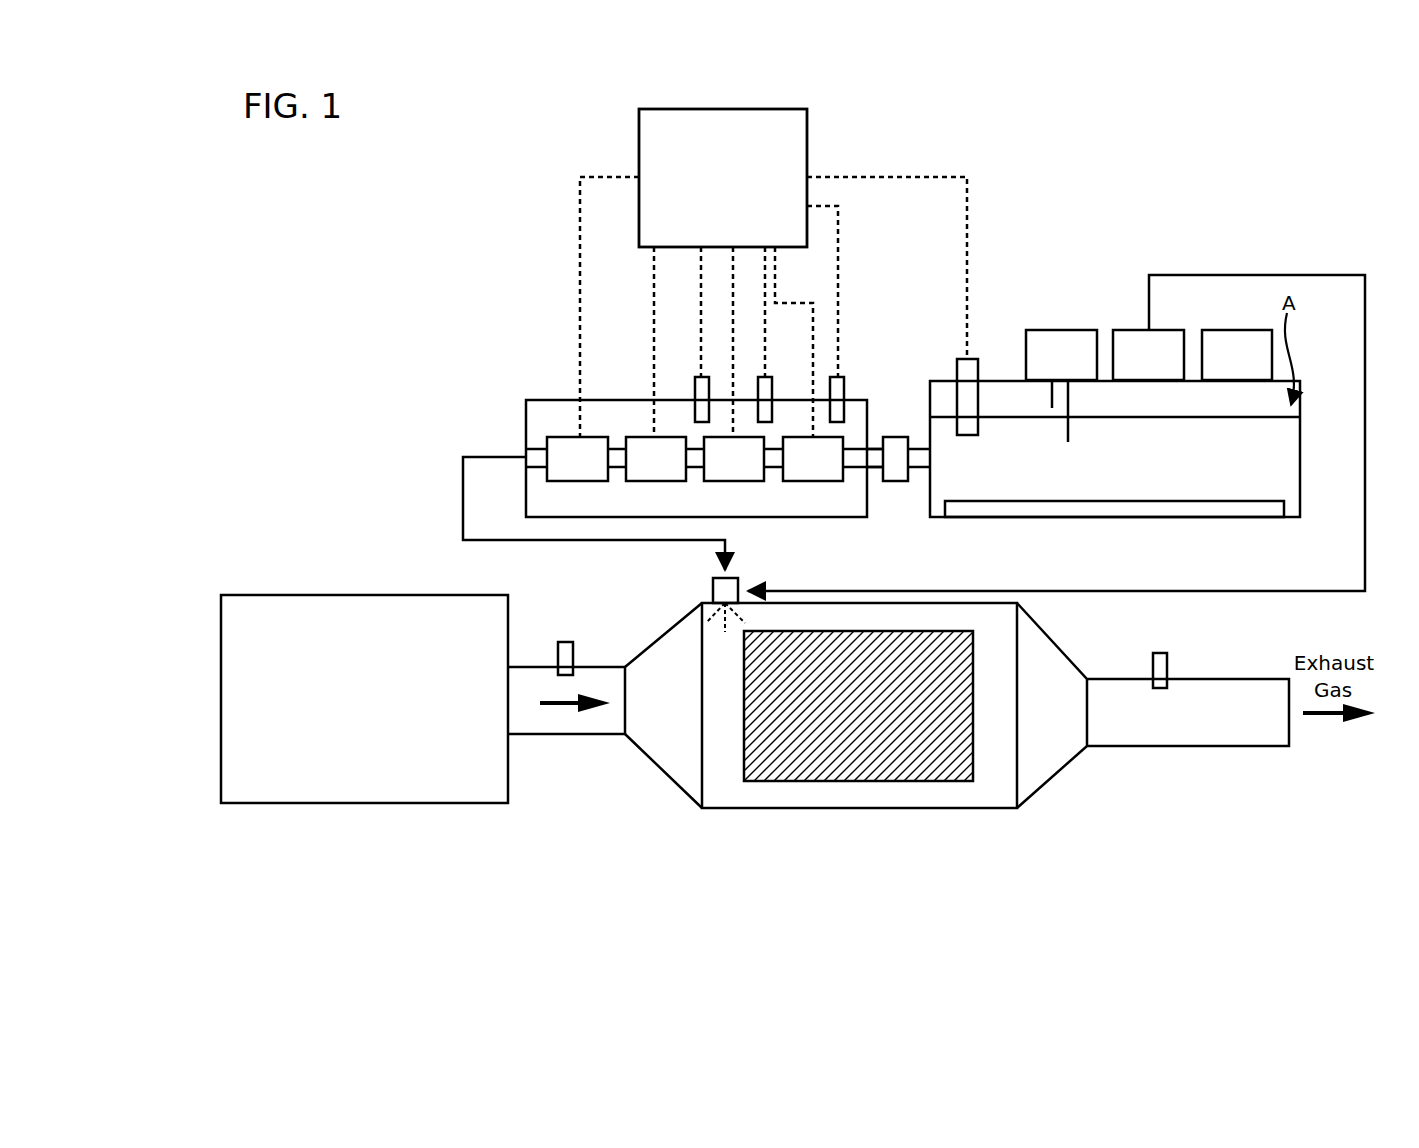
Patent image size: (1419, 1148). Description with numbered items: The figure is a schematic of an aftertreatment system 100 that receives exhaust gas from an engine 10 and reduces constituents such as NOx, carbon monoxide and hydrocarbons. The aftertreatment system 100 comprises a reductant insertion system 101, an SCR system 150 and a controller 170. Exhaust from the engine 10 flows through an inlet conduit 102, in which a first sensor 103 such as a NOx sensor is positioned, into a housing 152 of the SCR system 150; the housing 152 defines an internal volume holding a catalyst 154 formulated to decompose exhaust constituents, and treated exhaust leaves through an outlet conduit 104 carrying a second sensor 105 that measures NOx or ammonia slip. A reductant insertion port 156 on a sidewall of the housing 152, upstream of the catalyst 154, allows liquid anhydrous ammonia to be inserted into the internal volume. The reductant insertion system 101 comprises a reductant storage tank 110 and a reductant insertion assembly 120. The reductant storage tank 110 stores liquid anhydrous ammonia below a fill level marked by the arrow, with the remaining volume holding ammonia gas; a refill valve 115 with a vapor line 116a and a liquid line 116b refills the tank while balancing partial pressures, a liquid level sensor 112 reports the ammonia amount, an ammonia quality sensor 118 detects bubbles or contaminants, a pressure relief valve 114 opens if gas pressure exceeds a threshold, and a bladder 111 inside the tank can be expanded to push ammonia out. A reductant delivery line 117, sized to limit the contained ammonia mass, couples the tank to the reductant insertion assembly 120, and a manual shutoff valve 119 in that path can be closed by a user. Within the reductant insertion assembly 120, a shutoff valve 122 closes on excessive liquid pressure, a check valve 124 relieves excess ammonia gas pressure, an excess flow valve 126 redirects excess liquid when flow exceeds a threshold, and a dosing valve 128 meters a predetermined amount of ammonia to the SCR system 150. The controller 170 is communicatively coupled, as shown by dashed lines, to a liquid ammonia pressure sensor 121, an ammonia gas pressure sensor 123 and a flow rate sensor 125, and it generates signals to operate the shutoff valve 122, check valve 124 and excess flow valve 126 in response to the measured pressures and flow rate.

The engine 10 is at (354, 726).
The aftertreatment system 100 is at (1162, 170).
The reductant insertion system 101 is at (1033, 265).
The inlet conduit 102 is at (612, 720).
The first sensor 103 is at (572, 657).
The outlet conduit 104 is at (1256, 738).
The second sensor 105 is at (1164, 667).
The reductant storage tank 110 is at (1003, 372).
The bladder 111 is at (1160, 507).
The liquid level sensor 112 is at (1219, 366).
The pressure relief valve 114 is at (1130, 366).
The refill valve 115 is at (1043, 366).
The vapor line 116a is at (1050, 390).
The liquid line 116b is at (1068, 427).
The reductant delivery line 117 is at (872, 453).
The ammonia quality sensor 118 is at (963, 372).
The manual shutoff valve 119 is at (895, 467).
The reductant insertion assembly 120 is at (528, 392).
The liquid ammonia pressure sensor 121 is at (837, 400).
The shutoff valve 122 is at (831, 470).
The ammonia gas pressure sensor 123 is at (770, 388).
The check valve 124 is at (752, 470).
The flow rate sensor 125 is at (699, 388).
The excess flow valve 126 is at (674, 470).
The dosing valve 128 is at (595, 470).
The SCR system 150 is at (908, 749).
The housing 152 is at (908, 810).
The catalyst 154 is at (940, 762).
The reductant insertion port 156 is at (730, 590).
The controller 170 is at (742, 204).